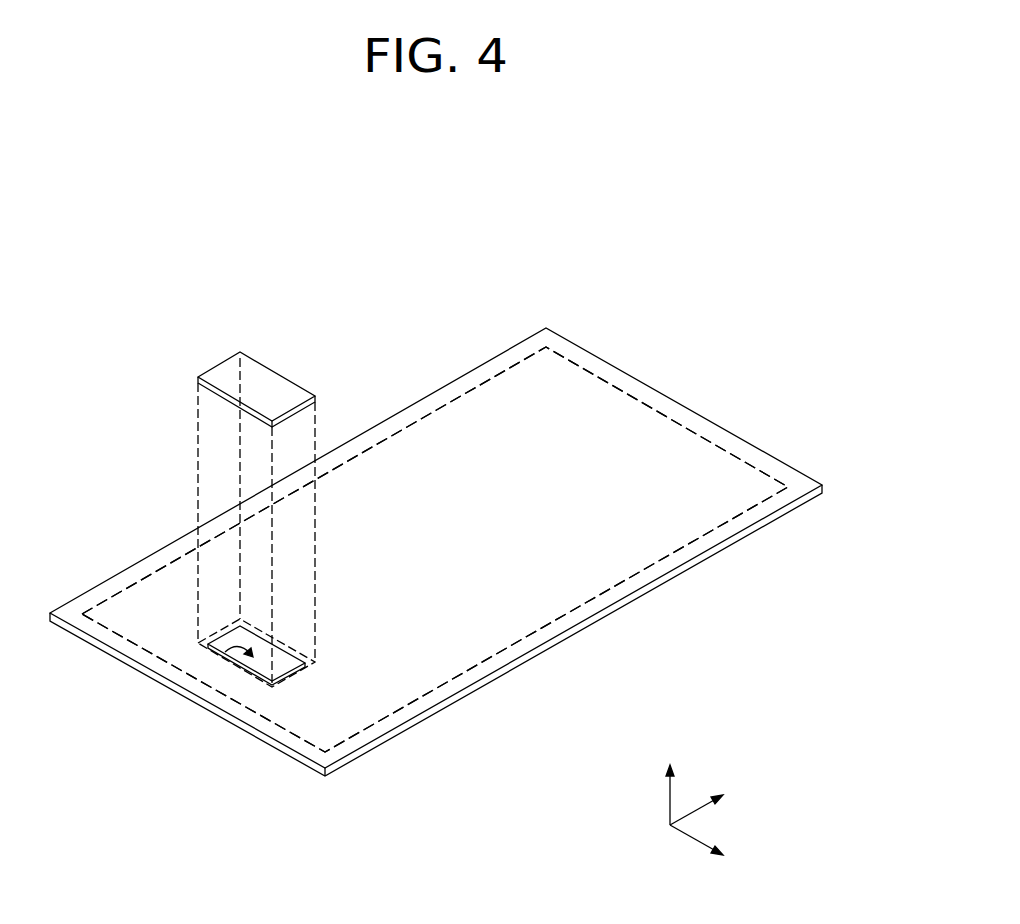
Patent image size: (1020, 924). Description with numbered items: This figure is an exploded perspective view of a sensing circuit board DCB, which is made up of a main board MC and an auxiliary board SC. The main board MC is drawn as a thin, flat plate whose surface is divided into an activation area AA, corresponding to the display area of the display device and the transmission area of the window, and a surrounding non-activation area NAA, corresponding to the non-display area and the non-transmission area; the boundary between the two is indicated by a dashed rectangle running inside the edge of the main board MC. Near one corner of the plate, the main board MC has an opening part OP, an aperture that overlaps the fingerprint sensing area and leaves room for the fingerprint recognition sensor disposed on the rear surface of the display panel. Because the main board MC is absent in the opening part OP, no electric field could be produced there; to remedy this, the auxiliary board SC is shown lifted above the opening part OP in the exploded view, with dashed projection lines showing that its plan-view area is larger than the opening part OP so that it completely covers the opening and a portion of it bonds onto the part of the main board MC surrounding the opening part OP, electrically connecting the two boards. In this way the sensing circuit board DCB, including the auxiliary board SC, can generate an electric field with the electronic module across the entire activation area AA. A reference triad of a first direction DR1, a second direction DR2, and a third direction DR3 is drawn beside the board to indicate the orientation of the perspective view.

The sensing circuit board DCB is at (682, 239).
The main board MC is at (593, 357).
The non-activation area NAA is at (648, 398).
The activation area AA is at (697, 459).
The auxiliary board SC is at (227, 373).
The opening part OP is at (227, 652).
The first direction DR1 is at (721, 852).
The second direction DR2 is at (721, 801).
The third direction DR3 is at (668, 782).